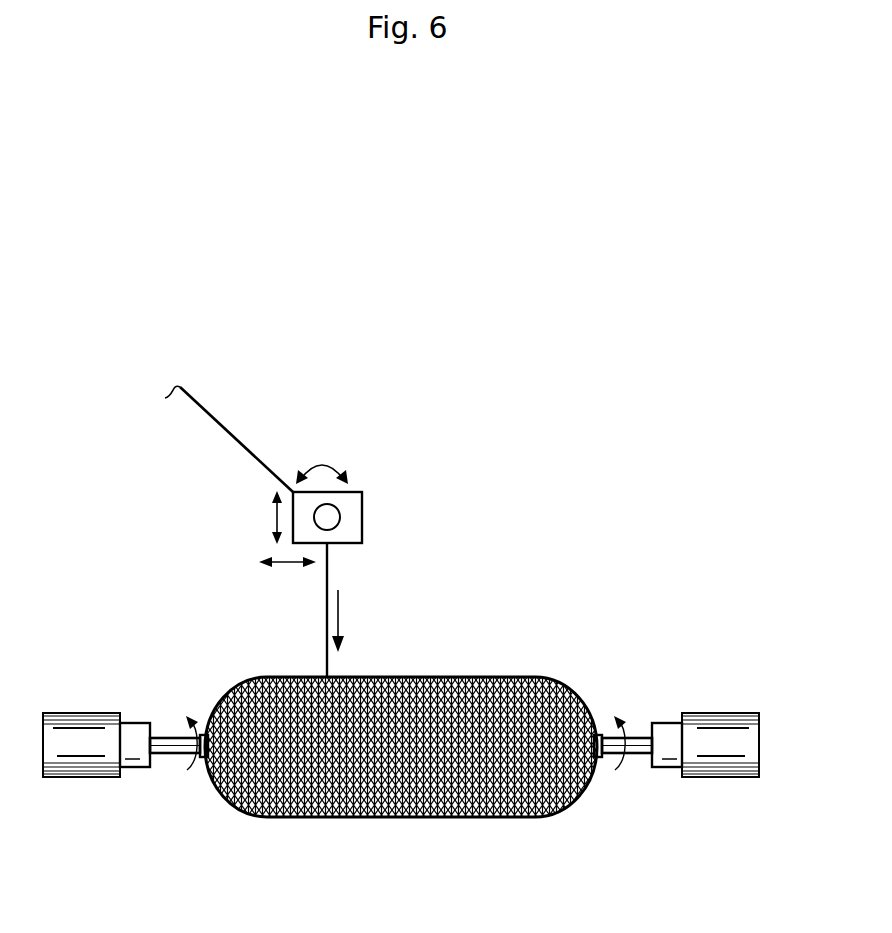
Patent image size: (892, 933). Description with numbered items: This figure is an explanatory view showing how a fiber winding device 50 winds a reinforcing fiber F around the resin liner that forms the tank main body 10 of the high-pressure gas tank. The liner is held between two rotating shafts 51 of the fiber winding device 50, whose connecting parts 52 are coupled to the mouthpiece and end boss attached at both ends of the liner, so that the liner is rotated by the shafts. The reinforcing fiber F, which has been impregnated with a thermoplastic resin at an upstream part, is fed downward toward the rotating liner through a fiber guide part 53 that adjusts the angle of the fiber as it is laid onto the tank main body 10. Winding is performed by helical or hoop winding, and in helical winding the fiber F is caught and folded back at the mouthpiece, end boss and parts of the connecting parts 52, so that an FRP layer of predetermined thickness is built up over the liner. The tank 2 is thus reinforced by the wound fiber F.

The liner / tank body 2 is at (506, 672).
The tank main body 10 is at (548, 680).
The fiber winding device 50 is at (697, 648).
The rotating shaft 51 is at (163, 735).
The connecting part 52 is at (205, 763).
The fiber guide part 53 is at (363, 513).
The reinforcing fiber F is at (330, 568).